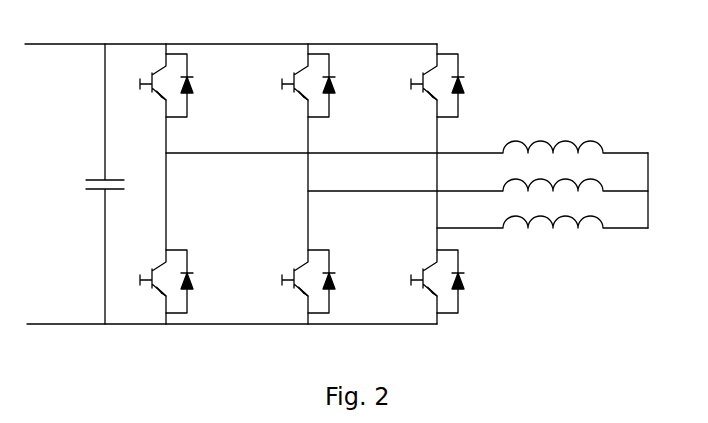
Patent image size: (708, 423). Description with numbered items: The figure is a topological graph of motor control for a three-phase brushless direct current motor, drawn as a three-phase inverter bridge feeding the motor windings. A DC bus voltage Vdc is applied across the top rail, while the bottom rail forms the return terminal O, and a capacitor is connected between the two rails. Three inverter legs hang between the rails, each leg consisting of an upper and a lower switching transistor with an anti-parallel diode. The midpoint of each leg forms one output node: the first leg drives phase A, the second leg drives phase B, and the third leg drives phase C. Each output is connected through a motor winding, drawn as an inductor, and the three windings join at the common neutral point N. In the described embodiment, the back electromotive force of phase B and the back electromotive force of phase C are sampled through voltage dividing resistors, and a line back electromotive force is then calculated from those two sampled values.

The DC bus voltage Vdc is at (229, 30).
The DC bus negative terminal O is at (232, 338).
The phase A is at (393, 156).
The phase B is at (465, 193).
The phase C is at (531, 231).
The neutral point N is at (661, 190).